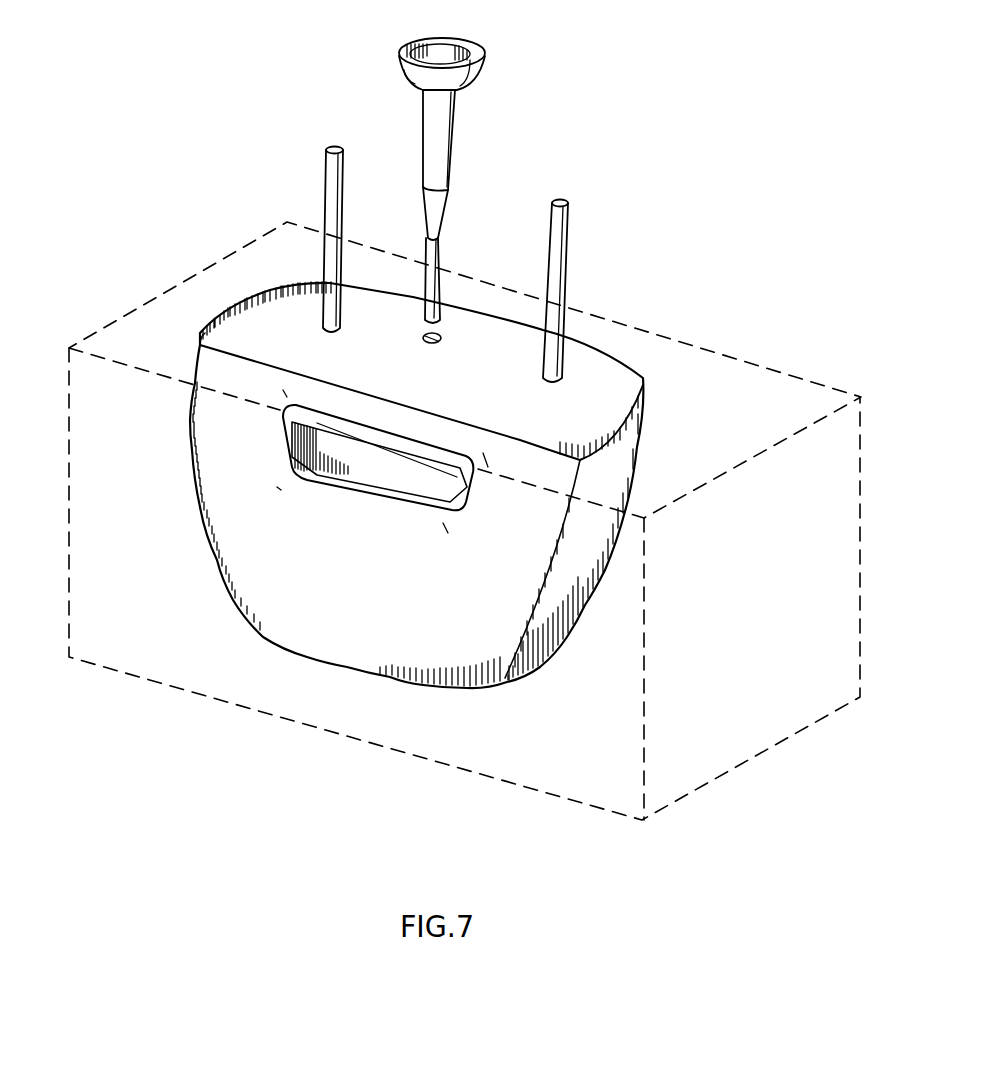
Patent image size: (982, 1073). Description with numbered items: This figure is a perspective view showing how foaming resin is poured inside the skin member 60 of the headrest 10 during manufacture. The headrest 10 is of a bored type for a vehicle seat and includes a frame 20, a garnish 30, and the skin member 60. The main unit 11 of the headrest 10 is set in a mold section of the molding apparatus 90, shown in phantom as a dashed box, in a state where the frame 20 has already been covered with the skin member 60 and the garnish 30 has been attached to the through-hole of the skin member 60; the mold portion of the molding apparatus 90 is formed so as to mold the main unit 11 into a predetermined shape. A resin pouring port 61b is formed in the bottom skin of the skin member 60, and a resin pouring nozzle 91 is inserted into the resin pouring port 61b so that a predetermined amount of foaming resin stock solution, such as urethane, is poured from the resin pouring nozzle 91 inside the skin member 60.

The headrest 10 is at (238, 308).
The main unit 11 is at (350, 668).
The frame 20 is at (569, 227).
The garnish 30 is at (288, 460).
The skin member 60 is at (633, 465).
The resin pouring port 61b is at (440, 335).
The molding apparatus 90 is at (770, 367).
The resin pouring nozzle 91 is at (459, 122).